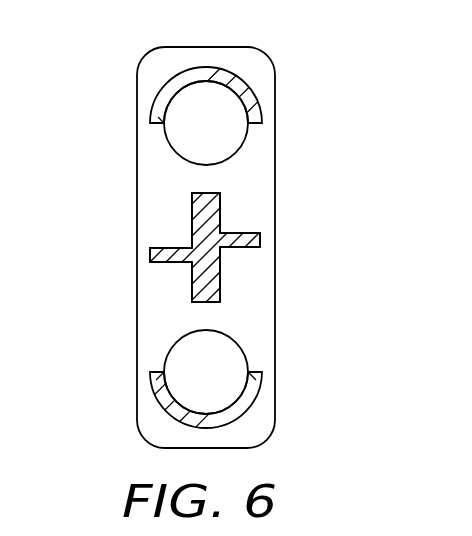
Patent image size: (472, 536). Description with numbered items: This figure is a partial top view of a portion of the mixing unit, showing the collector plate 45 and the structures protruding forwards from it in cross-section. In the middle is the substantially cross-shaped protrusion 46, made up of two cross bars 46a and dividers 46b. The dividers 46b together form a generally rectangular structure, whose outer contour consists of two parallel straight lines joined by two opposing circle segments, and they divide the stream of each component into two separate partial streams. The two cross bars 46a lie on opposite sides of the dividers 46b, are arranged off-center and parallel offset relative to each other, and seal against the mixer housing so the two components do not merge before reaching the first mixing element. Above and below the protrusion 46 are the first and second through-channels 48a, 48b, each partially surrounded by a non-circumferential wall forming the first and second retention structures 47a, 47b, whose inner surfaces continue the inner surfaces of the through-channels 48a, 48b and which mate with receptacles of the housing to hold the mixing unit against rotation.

The collector plate 45 is at (258, 147).
The cross-shaped protrusion 46 is at (247, 241).
The cross bars 46a is at (160, 264).
The dividers 46b is at (192, 208).
The first retention structure 47a is at (220, 78).
The second retention structure 47b is at (234, 410).
The first through-channel 48a is at (232, 117).
The second through-channel 48b is at (224, 378).